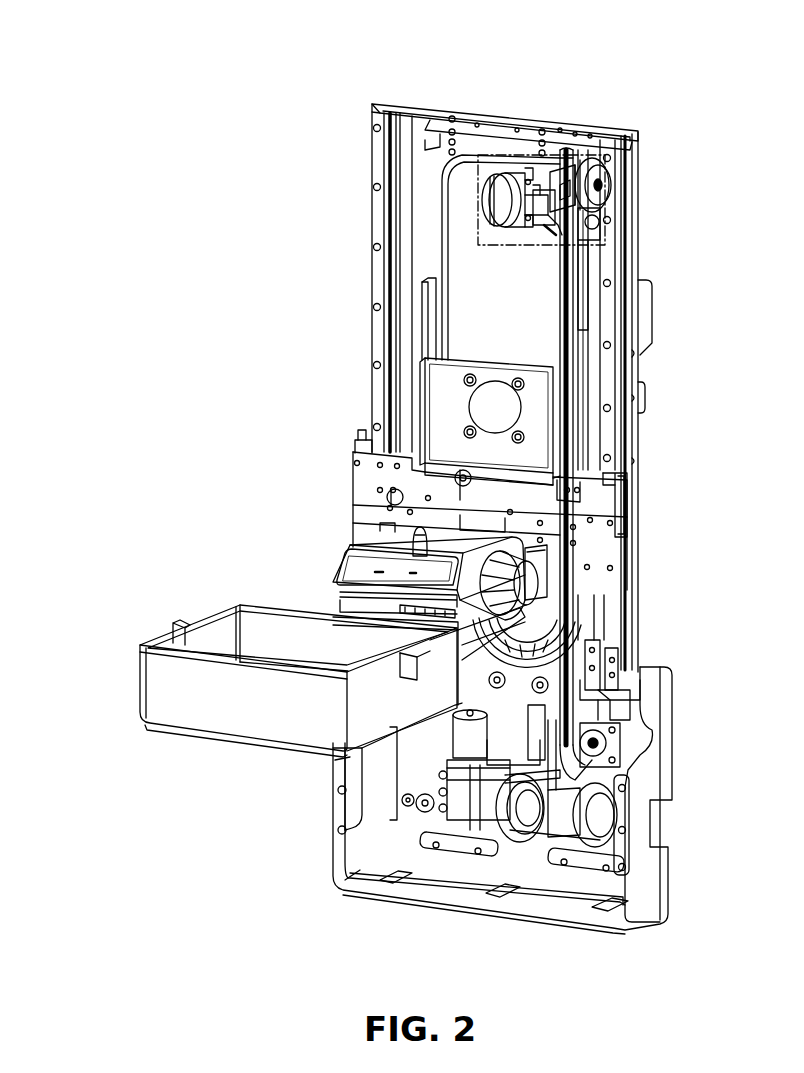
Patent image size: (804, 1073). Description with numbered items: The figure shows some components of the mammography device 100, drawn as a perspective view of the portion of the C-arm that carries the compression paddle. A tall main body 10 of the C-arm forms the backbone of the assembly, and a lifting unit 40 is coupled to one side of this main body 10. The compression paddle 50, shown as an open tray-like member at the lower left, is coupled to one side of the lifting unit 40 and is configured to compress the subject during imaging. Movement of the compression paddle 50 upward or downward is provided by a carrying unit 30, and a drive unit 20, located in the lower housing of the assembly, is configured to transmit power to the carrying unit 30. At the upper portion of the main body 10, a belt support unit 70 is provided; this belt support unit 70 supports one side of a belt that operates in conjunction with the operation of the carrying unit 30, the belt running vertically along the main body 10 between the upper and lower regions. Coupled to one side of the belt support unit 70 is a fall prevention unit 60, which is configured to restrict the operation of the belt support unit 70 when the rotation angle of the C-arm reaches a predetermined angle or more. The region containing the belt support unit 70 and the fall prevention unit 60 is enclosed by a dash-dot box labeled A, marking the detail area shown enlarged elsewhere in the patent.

The mammography device 100 is at (232, 86).
The main body 10 is at (376, 100).
The drive unit 20 is at (495, 837).
The carrying unit 30 is at (640, 757).
The lifting unit 40 is at (357, 509).
The compression paddle 50 is at (168, 630).
The fall prevention unit 60 is at (505, 167).
The belt support unit 70 is at (585, 153).
The detail region A is at (603, 186).